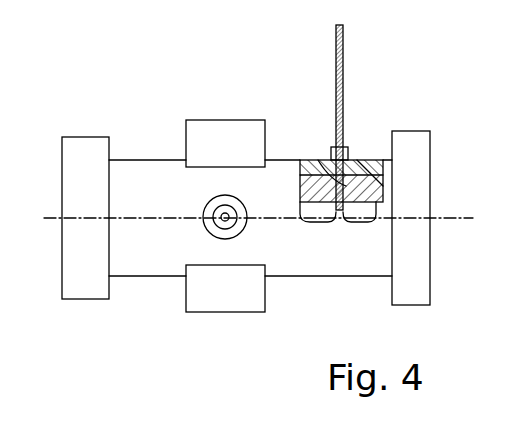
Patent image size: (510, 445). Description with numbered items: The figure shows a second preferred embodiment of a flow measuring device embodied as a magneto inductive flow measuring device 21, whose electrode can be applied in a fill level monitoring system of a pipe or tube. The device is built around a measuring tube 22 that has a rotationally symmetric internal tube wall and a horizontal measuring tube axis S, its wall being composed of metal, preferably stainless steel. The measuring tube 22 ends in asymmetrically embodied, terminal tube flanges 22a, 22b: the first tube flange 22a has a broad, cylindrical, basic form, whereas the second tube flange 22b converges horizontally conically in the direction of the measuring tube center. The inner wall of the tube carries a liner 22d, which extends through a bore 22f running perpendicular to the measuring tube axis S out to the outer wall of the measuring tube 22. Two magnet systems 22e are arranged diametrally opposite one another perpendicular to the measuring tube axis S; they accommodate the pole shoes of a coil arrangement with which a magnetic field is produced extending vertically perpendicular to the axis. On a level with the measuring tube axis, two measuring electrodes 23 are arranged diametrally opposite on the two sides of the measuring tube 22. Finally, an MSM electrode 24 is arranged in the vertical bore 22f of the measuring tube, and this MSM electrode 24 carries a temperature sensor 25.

The measuring tube axis S is at (44, 218).
The magneto inductive flow measuring device 21 is at (149, 152).
The measuring tube 22 is at (165, 260).
The first tube flange 22a is at (83, 145).
The second tube flange 22b is at (417, 145).
The liner 22d is at (383, 199).
The magnet systems 22e is at (225, 216).
The bore 22f is at (360, 183).
The measuring electrodes 23 is at (229, 221).
The MSM electrode 24 is at (350, 150).
The temperature sensor 25 is at (330, 186).